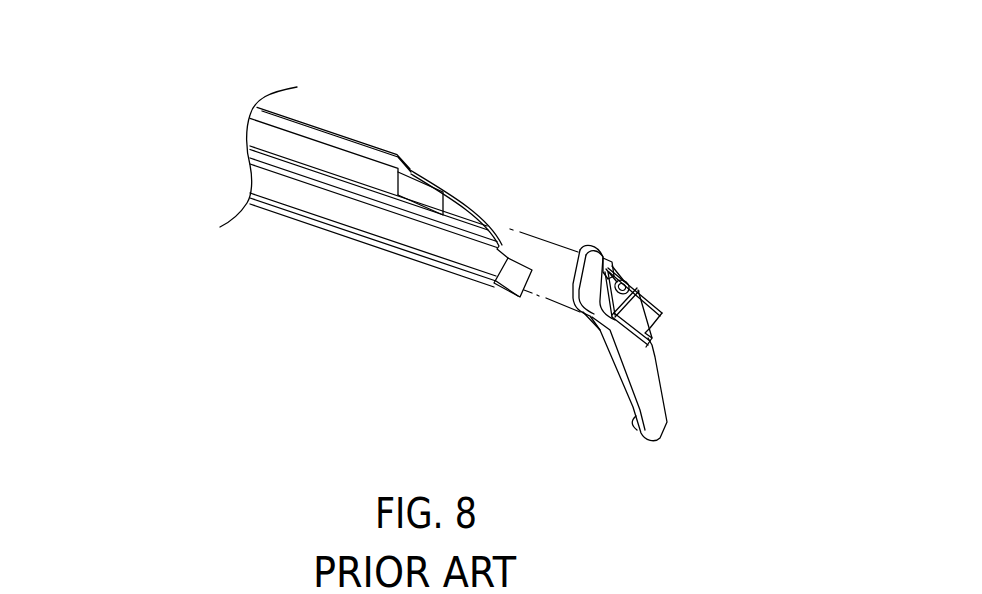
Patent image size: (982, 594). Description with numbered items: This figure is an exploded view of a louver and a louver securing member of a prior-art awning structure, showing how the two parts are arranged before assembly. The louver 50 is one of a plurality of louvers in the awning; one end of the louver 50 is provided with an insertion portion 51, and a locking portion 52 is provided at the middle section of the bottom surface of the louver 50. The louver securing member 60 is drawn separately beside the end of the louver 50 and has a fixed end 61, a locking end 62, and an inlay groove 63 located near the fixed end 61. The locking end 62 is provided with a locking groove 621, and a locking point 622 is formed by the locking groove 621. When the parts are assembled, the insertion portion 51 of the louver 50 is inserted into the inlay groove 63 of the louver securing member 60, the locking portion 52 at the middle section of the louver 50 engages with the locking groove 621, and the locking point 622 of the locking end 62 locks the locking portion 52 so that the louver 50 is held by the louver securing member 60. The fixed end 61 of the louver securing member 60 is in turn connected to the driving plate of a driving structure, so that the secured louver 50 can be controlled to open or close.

The louver 50 is at (432, 202).
The insertion portion 51 is at (488, 280).
The locking portion 52 is at (440, 203).
The louver securing member 60 is at (710, 311).
The fixed end 61 is at (673, 347).
The locking end 62 is at (678, 249).
The locking groove 621 is at (613, 272).
The locking point 622 is at (603, 257).
The inlay groove 63 is at (668, 323).